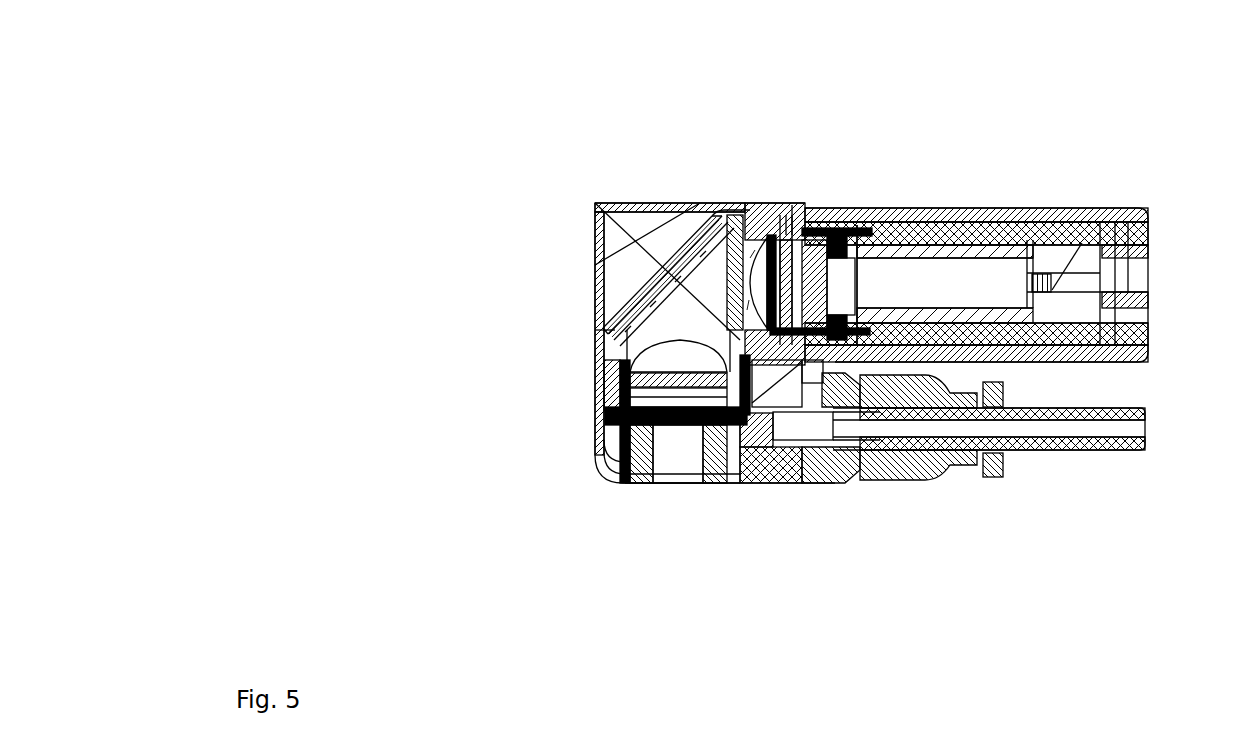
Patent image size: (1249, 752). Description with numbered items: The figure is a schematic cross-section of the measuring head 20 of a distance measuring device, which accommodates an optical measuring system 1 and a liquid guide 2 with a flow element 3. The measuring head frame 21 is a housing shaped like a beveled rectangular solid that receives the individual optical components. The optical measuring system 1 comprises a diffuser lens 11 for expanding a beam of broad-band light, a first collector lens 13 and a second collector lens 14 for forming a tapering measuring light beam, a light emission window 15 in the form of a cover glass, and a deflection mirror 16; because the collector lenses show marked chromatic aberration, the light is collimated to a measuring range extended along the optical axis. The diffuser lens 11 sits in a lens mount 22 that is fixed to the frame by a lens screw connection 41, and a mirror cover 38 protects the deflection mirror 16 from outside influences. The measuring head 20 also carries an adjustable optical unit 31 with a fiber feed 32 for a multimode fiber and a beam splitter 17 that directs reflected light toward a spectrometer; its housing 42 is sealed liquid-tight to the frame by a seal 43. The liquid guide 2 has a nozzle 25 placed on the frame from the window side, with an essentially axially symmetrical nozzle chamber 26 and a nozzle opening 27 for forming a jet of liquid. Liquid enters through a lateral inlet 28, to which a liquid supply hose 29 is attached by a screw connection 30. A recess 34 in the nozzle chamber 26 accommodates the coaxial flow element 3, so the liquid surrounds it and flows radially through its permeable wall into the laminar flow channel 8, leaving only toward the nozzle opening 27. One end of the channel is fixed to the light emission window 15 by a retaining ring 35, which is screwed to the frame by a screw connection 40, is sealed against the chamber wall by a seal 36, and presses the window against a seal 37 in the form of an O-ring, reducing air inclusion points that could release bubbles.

The measuring head 20 is at (275, 84).
The optical measuring system 1 is at (430, 248).
The liquid guide 2 is at (430, 399).
The flow element 3 is at (612, 478).
The laminar flow channel 8 is at (682, 455).
The diffuser lens 11 is at (836, 205).
The first collector lens 13 is at (753, 220).
The second collector lens 14 is at (601, 331).
The light emission window 15 is at (622, 420).
The deflection mirror 16 is at (610, 219).
The beam splitter 17 is at (1103, 210).
The measuring head frame 21 is at (777, 212).
The lens mount 22 is at (762, 216).
The nozzle 25 is at (605, 458).
The nozzle chamber 26 is at (628, 468).
The nozzle opening 27 is at (667, 497).
The inlet 28 is at (808, 484).
The liquid supply hose 29 is at (1040, 450).
The screw connection 30 is at (890, 478).
The optical unit 31 is at (963, 162).
The fiber feed 32 is at (1012, 207).
The recess 34 is at (628, 480).
The retaining ring 35 is at (605, 416).
The seal 36 is at (753, 462).
The seal 37 is at (752, 462).
The mirror cover 38 is at (676, 218).
The screw connection 40 is at (805, 483).
The lens screw connection 41 is at (792, 205).
The housing 42 is at (1090, 206).
The seal 43 is at (932, 475).